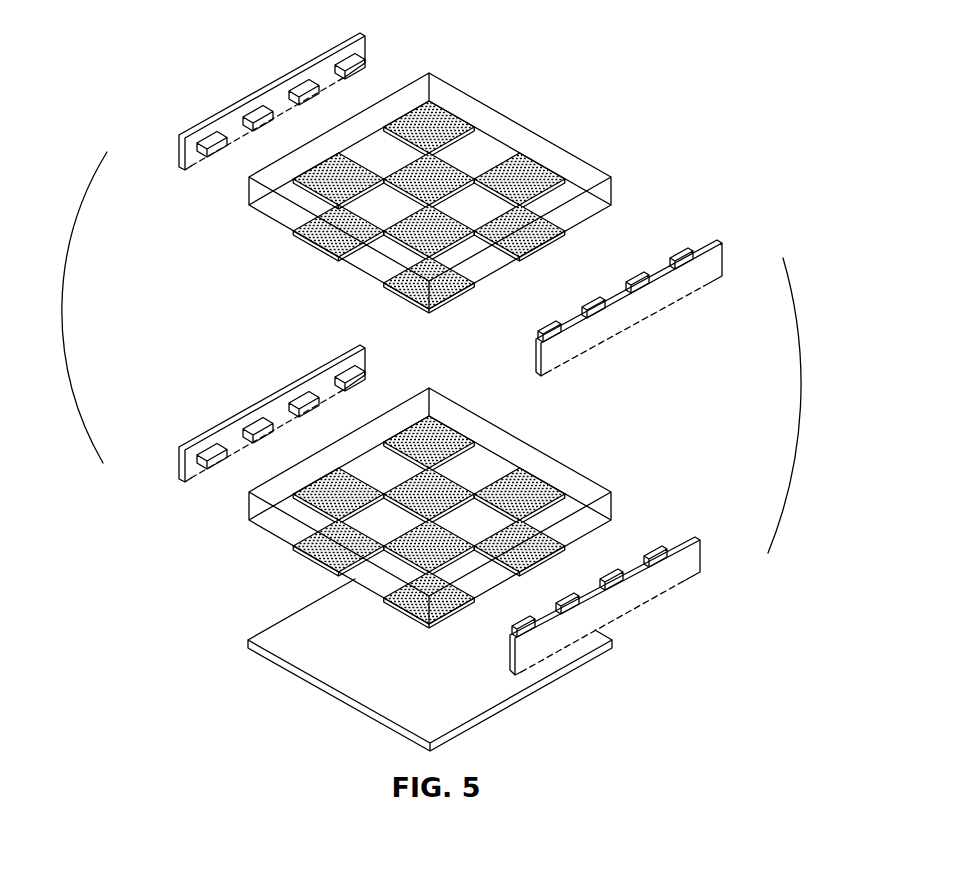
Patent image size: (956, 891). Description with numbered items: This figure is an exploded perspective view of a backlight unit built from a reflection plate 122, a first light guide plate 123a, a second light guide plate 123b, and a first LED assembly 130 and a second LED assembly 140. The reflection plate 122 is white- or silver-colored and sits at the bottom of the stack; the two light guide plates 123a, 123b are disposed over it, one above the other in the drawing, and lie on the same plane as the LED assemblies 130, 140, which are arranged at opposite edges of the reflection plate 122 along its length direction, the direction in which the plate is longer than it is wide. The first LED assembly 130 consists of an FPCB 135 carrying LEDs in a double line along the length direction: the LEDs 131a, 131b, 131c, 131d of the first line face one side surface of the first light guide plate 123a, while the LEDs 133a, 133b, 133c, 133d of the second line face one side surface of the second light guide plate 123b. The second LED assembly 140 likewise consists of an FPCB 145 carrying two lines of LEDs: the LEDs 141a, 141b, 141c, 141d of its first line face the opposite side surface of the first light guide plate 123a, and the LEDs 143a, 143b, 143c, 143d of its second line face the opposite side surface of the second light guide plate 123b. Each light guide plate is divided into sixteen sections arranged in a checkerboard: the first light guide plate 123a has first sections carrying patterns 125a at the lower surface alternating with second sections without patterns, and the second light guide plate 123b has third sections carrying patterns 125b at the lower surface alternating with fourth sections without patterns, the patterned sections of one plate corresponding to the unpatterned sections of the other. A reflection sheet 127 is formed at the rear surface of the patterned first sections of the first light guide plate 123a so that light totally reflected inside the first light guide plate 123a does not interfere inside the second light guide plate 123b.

The reflection plate 122 is at (352, 678).
The first light guide plate 123a is at (580, 84).
The second light guide plate 123b is at (581, 423).
The patterns 125a is at (531, 171).
The patterns 125b is at (578, 504).
The reflection sheet 127 is at (303, 245).
The first LED assembly 130 is at (802, 405).
The LED 131a is at (544, 328).
The LED 131b is at (589, 303).
The LED 131c is at (633, 279).
The LED 131d is at (678, 254).
The LED 133a is at (521, 625).
The LED 133b is at (565, 601).
The LED 133c is at (610, 577).
The LED 133d is at (655, 552).
The FPCB 135 is at (720, 260).
The second LED assembly 140 is at (75, 307).
The LED 141a is at (208, 136).
The LED 141b is at (254, 110).
The LED 141c is at (300, 84).
The LED 141d is at (346, 58).
The LED 143a is at (208, 448).
The LED 143b is at (254, 422).
The LED 143c is at (300, 396).
The LED 143d is at (346, 370).
The FPCB 145 is at (178, 153).